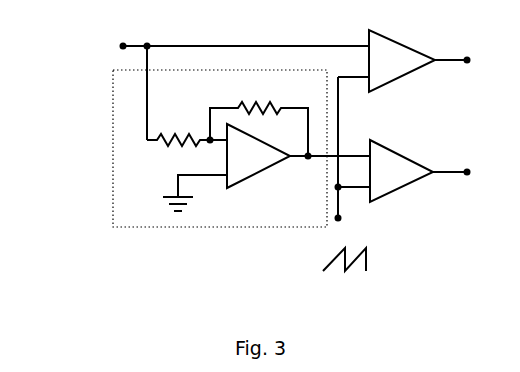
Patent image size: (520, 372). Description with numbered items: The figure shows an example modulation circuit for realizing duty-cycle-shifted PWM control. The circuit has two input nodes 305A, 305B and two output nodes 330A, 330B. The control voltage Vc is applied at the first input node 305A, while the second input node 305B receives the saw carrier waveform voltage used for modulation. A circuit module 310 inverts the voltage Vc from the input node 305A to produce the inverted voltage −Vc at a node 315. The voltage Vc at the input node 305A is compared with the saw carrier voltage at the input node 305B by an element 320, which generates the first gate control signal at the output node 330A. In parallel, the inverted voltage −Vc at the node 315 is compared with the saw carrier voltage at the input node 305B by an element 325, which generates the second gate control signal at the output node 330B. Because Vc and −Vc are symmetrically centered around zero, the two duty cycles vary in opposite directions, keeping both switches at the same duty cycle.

The input node 305A is at (112, 45).
The input node 305B is at (333, 230).
The circuit module 310 is at (187, 150).
The node 315 is at (292, 189).
The element 320 is at (372, 21).
The element 325 is at (393, 207).
The output node 330A is at (469, 70).
The output node 330B is at (470, 190).